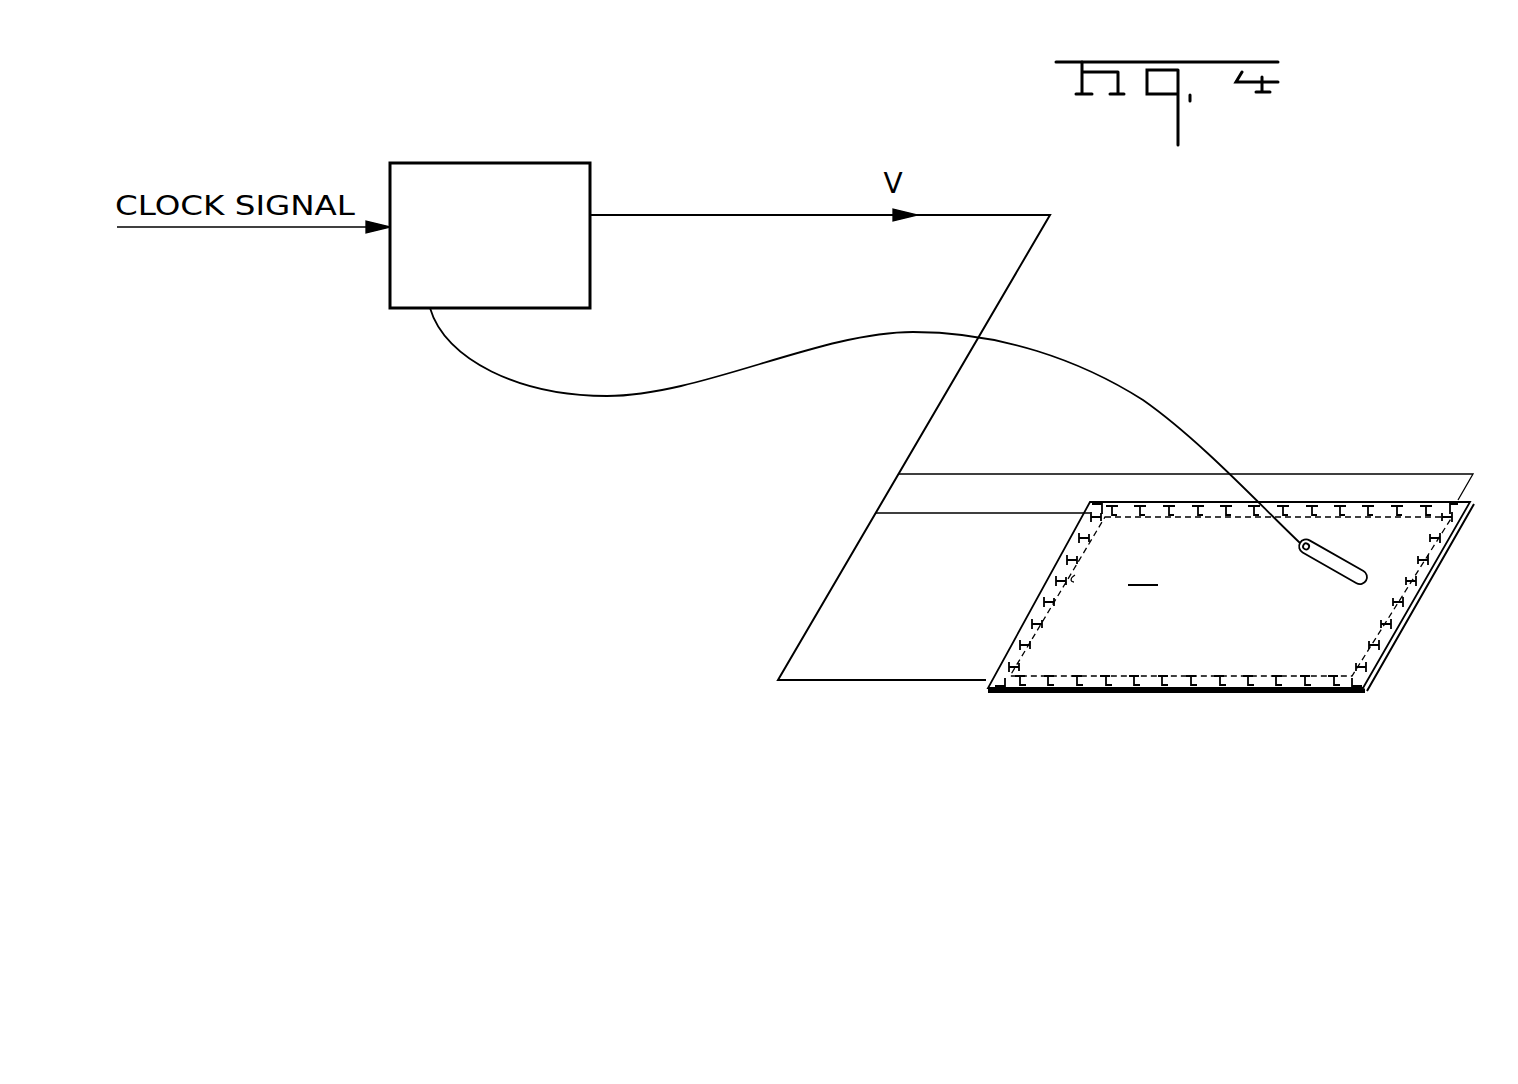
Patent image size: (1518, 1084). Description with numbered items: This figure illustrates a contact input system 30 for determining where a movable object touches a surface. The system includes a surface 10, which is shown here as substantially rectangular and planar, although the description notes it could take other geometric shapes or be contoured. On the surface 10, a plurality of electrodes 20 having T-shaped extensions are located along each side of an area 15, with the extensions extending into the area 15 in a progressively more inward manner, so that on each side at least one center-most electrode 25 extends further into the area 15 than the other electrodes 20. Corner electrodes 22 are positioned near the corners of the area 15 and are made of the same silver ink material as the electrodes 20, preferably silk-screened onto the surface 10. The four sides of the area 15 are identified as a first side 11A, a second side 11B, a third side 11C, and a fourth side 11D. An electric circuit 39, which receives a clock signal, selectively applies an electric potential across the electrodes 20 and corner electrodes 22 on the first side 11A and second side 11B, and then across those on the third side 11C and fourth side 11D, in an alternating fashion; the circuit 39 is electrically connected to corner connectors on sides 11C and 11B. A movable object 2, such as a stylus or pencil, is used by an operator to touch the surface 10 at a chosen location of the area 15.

The electric circuit 39 is at (503, 163).
The contact input system 30 is at (214, 821).
The surface 10 is at (1374, 692).
The electrodes 20 is at (1077, 693).
The first side 11A is at (1268, 500).
The second side 11B is at (1167, 693).
The third side 11C is at (1012, 633).
The fourth side 11D is at (1415, 588).
The corner electrodes 22 is at (1458, 505).
The area 15 is at (1142, 565).
The center-most electrode 25 is at (1074, 580).
The movable object 2 is at (1330, 563).